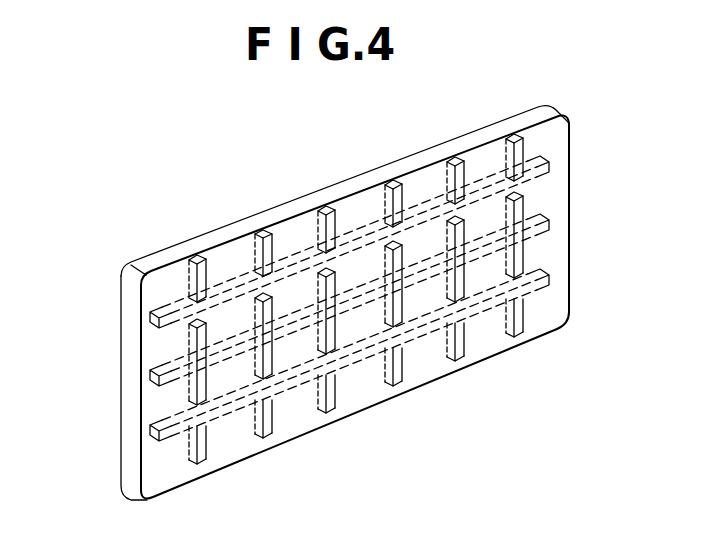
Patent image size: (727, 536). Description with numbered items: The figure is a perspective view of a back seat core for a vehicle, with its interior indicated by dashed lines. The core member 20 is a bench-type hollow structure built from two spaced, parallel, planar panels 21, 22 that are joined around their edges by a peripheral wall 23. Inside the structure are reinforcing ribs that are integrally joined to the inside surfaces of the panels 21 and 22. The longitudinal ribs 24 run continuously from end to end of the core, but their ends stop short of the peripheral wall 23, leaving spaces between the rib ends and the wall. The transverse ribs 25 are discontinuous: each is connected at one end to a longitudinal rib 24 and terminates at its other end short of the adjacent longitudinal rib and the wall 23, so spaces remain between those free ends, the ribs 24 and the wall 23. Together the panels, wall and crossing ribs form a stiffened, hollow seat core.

The core member 20 is at (121, 311).
The planar panel 21 is at (297, 233).
The planar panel 22 is at (174, 249).
The peripheral wall 23 is at (427, 161).
The longitudinal ribs 24 is at (373, 297).
The transverse ribs 25 is at (523, 254).